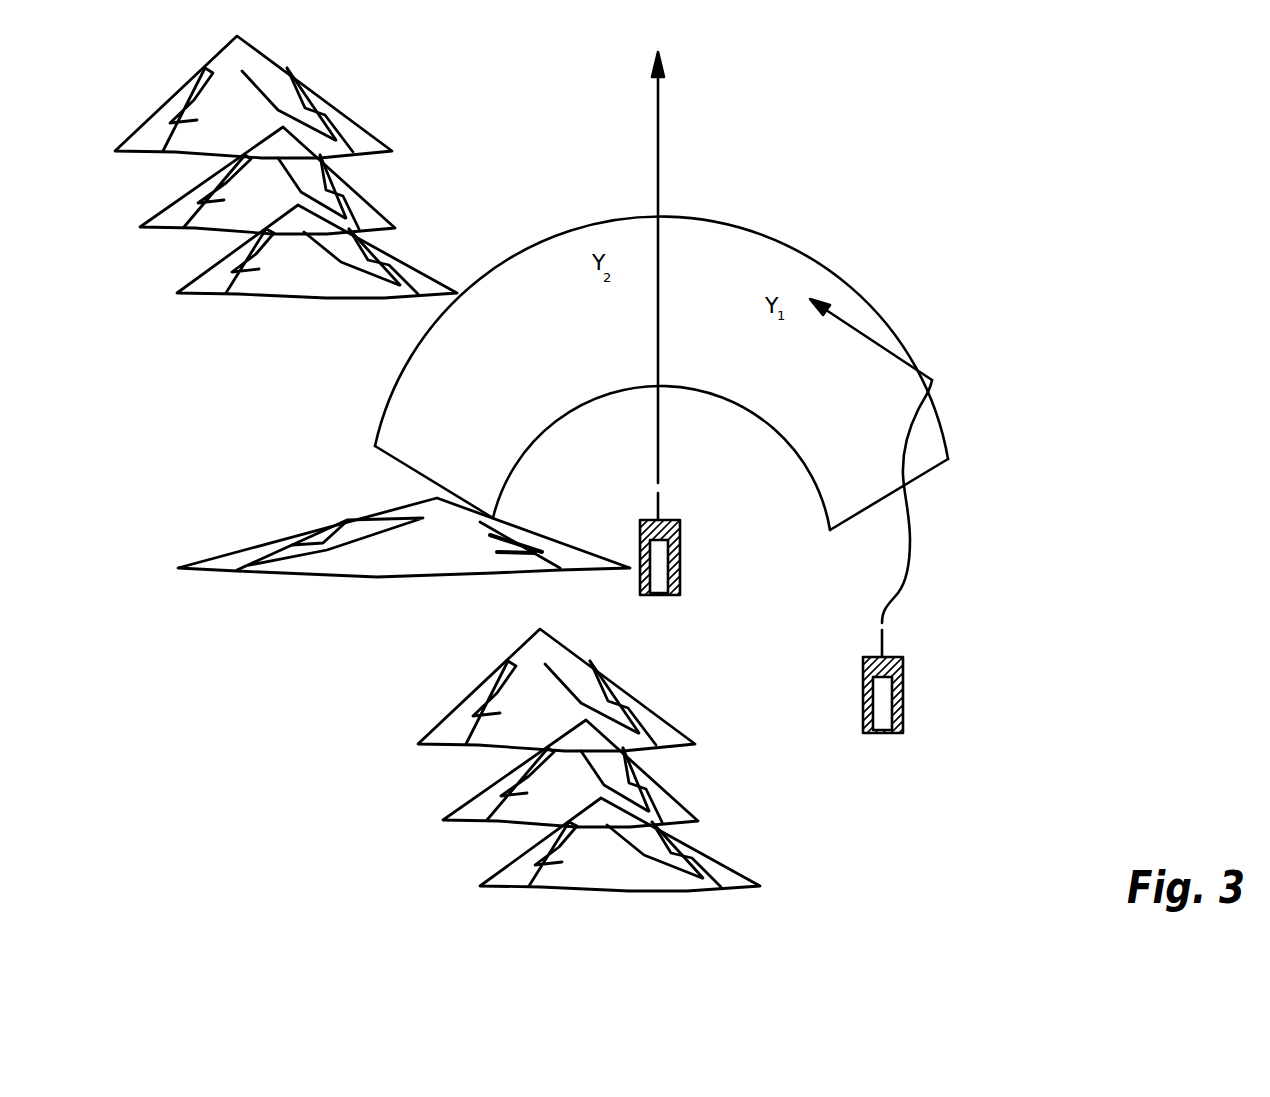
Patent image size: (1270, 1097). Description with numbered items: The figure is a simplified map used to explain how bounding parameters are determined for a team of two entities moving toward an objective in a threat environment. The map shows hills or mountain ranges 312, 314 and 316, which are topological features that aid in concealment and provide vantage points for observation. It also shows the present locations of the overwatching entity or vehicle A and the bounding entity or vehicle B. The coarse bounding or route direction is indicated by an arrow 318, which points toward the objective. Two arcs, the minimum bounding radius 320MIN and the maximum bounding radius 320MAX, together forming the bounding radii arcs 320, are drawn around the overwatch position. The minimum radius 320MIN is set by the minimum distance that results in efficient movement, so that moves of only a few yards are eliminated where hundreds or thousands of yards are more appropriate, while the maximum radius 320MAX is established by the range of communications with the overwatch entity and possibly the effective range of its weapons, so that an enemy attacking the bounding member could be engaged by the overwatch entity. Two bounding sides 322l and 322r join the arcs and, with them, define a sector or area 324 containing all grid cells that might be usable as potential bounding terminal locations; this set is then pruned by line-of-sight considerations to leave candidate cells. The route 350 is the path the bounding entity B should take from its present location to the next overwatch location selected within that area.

The hill or mountain range 312 is at (334, 92).
The hill or mountain range 314 is at (252, 543).
The hill or mountain range 316 is at (452, 710).
The arrow indicating bounding or route direction 318 is at (661, 131).
The bounding radii arcs 320 is at (661, 370).
The maximum bounding radius 320MAX is at (803, 253).
The minimum bounding radius 320MIN is at (517, 465).
The left bounding side 322l is at (375, 453).
The right bounding side 322r is at (923, 474).
The sector or area of potential bounding locations 324 is at (470, 453).
The route of the bounding entity 350 is at (911, 567).
The overwatching entity or vehicle A is at (680, 574).
The bounding entity or vehicle B is at (903, 703).